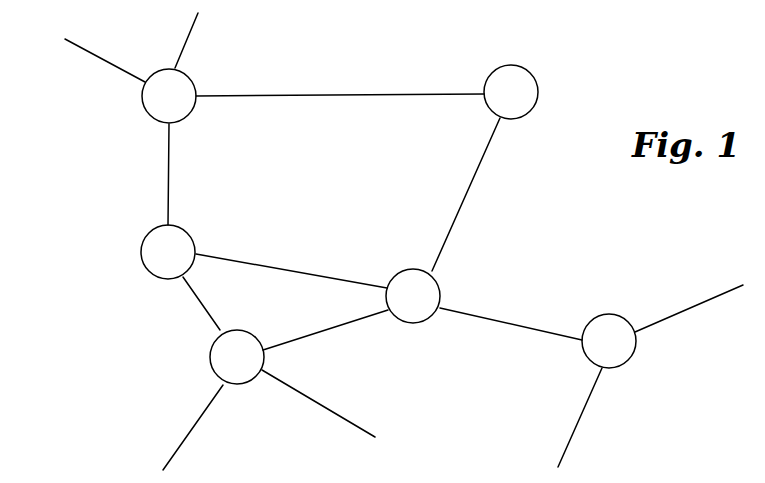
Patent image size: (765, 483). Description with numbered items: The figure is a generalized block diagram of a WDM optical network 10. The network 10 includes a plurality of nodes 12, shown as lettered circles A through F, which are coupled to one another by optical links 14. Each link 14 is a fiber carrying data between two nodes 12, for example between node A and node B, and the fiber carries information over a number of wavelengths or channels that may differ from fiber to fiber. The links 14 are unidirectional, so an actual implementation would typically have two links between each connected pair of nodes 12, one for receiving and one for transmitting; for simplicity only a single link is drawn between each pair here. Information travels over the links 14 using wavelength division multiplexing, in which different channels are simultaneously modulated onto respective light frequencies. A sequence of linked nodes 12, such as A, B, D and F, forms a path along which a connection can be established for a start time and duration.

The optical network 10 is at (628, 79).
The node 12 is at (190, 80).
The optical link 14 is at (528, 357).